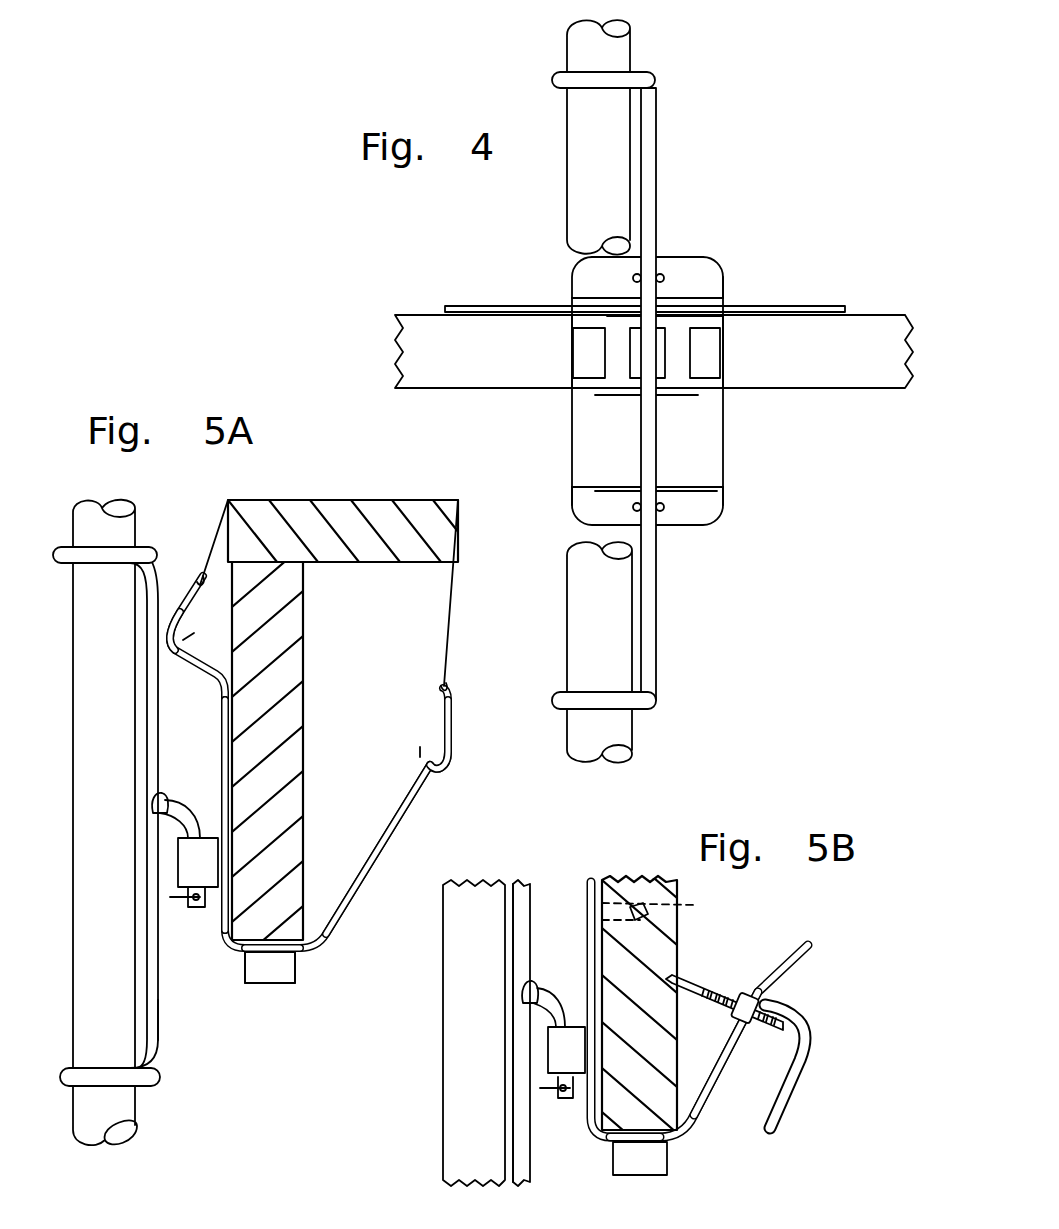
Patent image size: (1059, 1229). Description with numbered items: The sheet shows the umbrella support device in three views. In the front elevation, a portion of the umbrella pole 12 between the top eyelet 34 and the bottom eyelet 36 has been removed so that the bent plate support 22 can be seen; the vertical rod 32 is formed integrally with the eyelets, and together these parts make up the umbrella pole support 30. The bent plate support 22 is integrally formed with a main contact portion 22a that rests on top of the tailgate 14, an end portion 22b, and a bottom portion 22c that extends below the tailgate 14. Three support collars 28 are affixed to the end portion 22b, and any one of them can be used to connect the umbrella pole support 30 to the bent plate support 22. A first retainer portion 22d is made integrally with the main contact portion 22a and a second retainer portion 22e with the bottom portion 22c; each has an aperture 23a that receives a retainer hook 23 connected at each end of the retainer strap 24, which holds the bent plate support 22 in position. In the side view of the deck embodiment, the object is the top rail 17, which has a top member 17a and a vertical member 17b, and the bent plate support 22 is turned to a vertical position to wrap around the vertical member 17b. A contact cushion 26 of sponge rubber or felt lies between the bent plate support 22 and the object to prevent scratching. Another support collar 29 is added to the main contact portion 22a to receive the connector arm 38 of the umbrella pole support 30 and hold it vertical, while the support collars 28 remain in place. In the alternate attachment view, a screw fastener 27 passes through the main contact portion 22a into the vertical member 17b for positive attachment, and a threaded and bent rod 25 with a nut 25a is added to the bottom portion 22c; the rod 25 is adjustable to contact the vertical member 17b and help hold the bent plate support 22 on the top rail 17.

In FIG. 4, the umbrella pole 12 is at (620, 50).
In FIG. 5A, the umbrella pole 12 is at (110, 1120).
In FIG. 5B, the umbrella pole 12 is at (455, 1097).
In FIG. 4, the tailgate 14 is at (851, 373).
In FIG. 5A, the top rail 17 is at (355, 734).
In FIG. 5A, the top member 17a is at (333, 510).
In FIG. 5A, the vertical member 17b is at (290, 710).
In FIG. 5A, the bent plate support 22 is at (280, 820).
In FIG. 5B, the bent plate support 22 is at (675, 1028).
In FIG. 4, the main contact portion 22a is at (792, 305).
In FIG. 5A, the main contact portion 22a is at (213, 855).
In FIG. 4, the end portion 22b is at (678, 340).
In FIG. 5A, the end portion 22b is at (278, 952).
In FIG. 5B, the end portion 22b is at (588, 958).
In FIG. 4, the bottom portion 22c is at (672, 453).
In FIG. 5A, the bottom portion 22c is at (353, 892).
In FIG. 5B, the bottom portion 22c is at (738, 1050).
In FIG. 4, the first retainer portion 22d is at (705, 268).
In FIG. 5A, the first retainer portion 22d is at (197, 667).
In FIG. 4, the second retainer portion 22e is at (710, 513).
In FIG. 5A, the second retainer portion 22e is at (417, 779).
In FIG. 5A, the retainer hook 23 is at (195, 603).
In FIG. 4, the aperture 23a is at (630, 279).
In FIG. 5A, the retainer strap 24 is at (445, 645).
In FIG. 5B, the threaded and bent rod 25 is at (795, 1090).
In FIG. 5B, the nut 25a is at (758, 1000).
In FIG. 5A, the contact cushion 26 is at (360, 847).
In FIG. 5B, the screw fastener 27 is at (683, 902).
In FIG. 4, the support collar 28 is at (632, 373).
In FIG. 5A, the support collar 28 is at (250, 979).
In FIG. 5A, the support collar 29 is at (175, 908).
In FIG. 5A, the umbrella pole support 30 is at (175, 1038).
In FIG. 5B, the umbrella pole support 30 is at (540, 895).
In FIG. 4, the vertical rod 32 is at (654, 588).
In FIG. 5A, the vertical rod 32 is at (157, 969).
In FIG. 4, the top eyelet 34 is at (553, 80).
In FIG. 5A, the top eyelet 34 is at (103, 557).
In FIG. 4, the bottom eyelet 36 is at (562, 705).
In FIG. 5A, the bottom eyelet 36 is at (112, 1082).
In FIG. 5A, the connector arm 38 is at (178, 812).